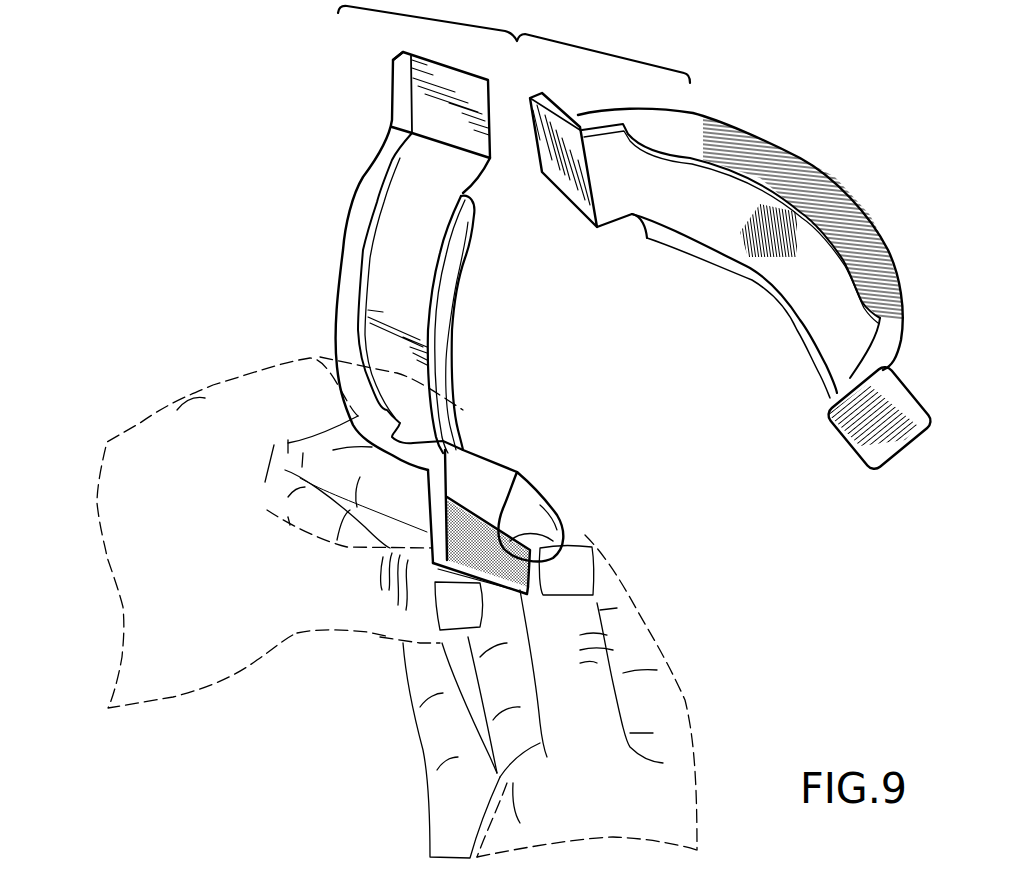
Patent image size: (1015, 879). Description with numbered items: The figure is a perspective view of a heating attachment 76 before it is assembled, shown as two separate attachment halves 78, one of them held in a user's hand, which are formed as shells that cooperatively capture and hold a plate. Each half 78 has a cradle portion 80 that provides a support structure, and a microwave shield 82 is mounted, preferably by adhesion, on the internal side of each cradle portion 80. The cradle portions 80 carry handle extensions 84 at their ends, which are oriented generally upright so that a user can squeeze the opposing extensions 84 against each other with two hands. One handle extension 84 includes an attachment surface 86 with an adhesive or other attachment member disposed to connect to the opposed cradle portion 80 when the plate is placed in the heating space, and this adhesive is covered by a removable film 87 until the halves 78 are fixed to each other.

The heating attachment 76 is at (514, 41).
The attachment half 78 is at (350, 293).
The cradle portion 80 is at (366, 201).
The microwave shield 82 is at (413, 272).
The handle extension 84 is at (403, 82).
The attachment surface 86 is at (535, 507).
The removable film 87 is at (548, 512).